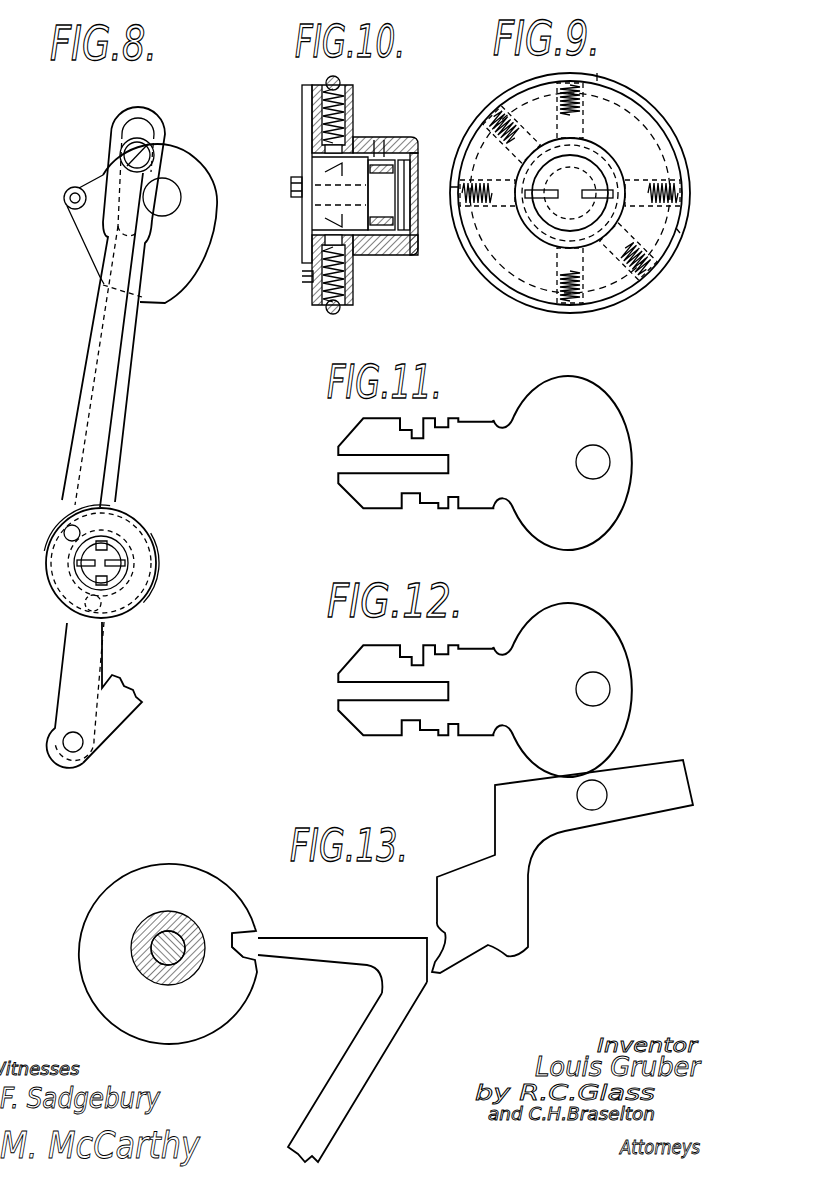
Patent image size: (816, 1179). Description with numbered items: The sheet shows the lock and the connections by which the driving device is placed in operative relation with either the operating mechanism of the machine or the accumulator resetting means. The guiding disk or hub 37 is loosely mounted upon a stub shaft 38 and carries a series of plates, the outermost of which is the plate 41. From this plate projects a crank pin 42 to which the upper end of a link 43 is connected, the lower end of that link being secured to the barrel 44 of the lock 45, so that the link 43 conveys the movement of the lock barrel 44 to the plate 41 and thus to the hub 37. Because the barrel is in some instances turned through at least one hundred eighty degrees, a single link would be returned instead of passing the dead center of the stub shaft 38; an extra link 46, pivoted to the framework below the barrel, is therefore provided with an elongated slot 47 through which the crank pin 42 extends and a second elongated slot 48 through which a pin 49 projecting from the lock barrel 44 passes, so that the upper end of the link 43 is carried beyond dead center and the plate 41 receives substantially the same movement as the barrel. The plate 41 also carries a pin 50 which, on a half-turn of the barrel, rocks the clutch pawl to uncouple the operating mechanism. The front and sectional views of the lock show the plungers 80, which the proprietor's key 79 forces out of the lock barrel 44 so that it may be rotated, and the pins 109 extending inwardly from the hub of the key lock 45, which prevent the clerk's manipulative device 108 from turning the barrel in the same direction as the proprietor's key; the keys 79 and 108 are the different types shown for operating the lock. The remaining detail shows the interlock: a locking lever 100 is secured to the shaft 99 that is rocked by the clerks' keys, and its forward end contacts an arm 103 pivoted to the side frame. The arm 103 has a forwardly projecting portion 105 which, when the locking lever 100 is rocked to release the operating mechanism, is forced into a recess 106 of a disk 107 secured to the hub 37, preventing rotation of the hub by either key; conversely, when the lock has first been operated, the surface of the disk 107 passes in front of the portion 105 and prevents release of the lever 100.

In FIG. 13, the guiding disk or hub 37 is at (180, 917).
In FIG. 8, the stub shaft 38 is at (172, 190).
In FIG. 13, the stub shaft 38 is at (155, 953).
In FIG. 8, the plate 41 is at (212, 202).
In FIG. 8, the crank pin 42 is at (128, 152).
In FIG. 8, the link 43 is at (80, 383).
In FIG. 8, the lock barrel 44 is at (120, 547).
In FIG. 8, the lock 45 is at (127, 518).
In FIG. 8, the extra link 46 is at (127, 393).
In FIG. 8, the elongated slot 47 is at (143, 123).
In FIG. 8, the elongated slot 48 is at (123, 582).
In FIG. 8, the pin 49 is at (120, 557).
In FIG. 10, the pin 49 is at (293, 197).
In FIG. 9, the pin 49 is at (560, 172).
In FIG. 8, the pin 50 is at (71, 210).
In FIG. 11, the proprietor's key 79 is at (622, 427).
In FIG. 9, the plungers 80 is at (622, 178).
In FIG. 13, the shaft 99 is at (598, 795).
In FIG. 13, the locking lever 100 is at (615, 825).
In FIG. 13, the arm 103 is at (383, 1046).
In FIG. 13, the forwardly projecting portion 105 is at (300, 955).
In FIG. 13, the recess 106 is at (230, 952).
In FIG. 13, the disk 107 is at (183, 1033).
In FIG. 12, the clerk's manipulative device 108 is at (622, 664).
In FIG. 10, the pins 109 is at (385, 156).